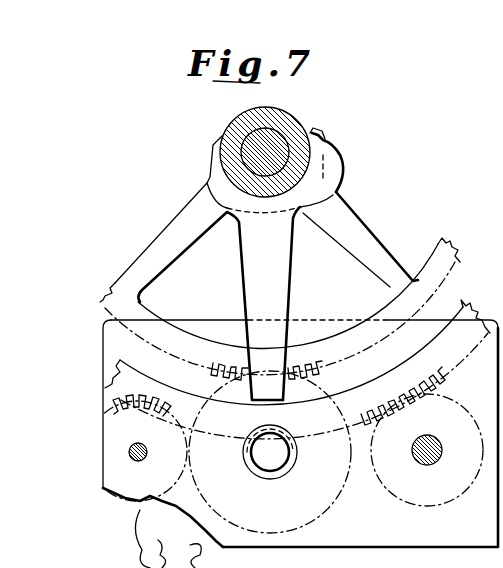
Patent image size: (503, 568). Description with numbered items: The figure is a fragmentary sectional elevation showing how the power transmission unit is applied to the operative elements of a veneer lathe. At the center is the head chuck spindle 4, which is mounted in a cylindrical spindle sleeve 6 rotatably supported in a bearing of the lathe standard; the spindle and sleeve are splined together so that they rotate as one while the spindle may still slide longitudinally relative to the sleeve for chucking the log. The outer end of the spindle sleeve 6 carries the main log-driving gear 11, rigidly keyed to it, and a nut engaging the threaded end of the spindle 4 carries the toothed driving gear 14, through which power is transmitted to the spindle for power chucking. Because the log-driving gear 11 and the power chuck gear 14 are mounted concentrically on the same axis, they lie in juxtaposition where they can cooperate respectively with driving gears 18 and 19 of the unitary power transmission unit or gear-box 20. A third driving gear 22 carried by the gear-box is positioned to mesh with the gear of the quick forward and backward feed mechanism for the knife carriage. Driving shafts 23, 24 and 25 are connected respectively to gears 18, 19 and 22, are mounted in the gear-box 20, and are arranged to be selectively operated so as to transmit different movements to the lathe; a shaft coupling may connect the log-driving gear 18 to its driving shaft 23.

The head chuck spindle 4 is at (275, 153).
The spindle sleeve 6 is at (228, 146).
The main log-driving gear 11 is at (421, 365).
The toothed driving gear 14 is at (403, 297).
The driving gear 18 is at (427, 450).
The driving gear 19 is at (308, 391).
The power transmission unit 20 is at (300, 433).
The driving gear 22 is at (137, 448).
The driving shaft 23 is at (428, 459).
The driving shaft 24 is at (273, 461).
The driving shaft 25 is at (143, 457).